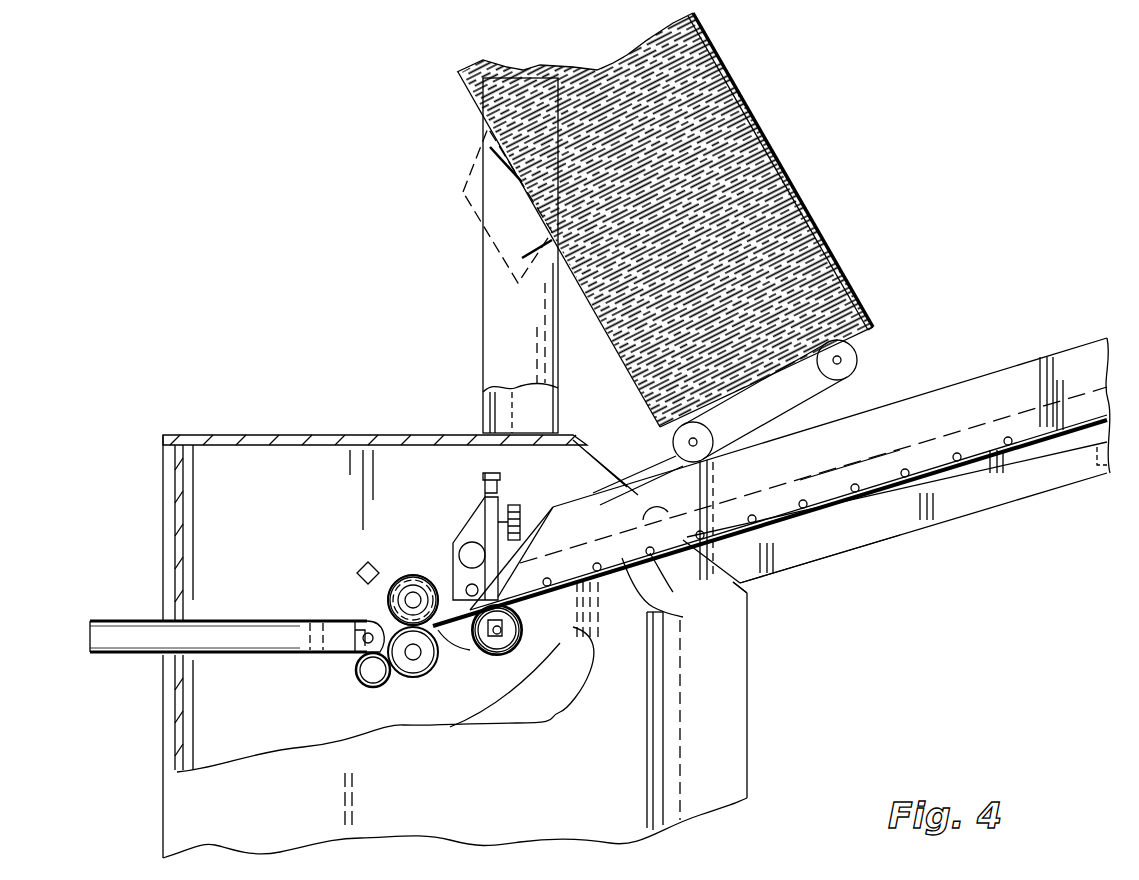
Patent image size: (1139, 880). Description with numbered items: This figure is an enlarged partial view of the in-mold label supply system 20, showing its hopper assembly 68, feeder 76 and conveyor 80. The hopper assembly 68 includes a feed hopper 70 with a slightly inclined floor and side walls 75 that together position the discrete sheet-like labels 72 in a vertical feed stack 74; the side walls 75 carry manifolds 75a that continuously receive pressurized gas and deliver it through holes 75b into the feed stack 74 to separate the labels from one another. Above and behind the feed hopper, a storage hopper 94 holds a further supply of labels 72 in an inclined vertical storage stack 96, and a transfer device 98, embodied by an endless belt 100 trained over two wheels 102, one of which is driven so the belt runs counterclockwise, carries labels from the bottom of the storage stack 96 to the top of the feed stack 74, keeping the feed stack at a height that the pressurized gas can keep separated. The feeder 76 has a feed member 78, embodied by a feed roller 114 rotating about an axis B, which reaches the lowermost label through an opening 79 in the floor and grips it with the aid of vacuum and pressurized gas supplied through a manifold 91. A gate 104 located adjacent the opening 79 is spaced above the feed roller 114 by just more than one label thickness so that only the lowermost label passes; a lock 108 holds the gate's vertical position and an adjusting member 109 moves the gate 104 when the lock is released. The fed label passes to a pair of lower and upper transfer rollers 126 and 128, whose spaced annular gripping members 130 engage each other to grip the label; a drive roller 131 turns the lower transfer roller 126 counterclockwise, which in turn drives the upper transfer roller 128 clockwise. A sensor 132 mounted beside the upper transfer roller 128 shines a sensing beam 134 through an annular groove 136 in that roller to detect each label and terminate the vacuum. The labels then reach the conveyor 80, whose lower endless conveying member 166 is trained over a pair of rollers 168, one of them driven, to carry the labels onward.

The in-mold label supply system 20 is at (280, 148).
The hopper assembly 68 is at (893, 117).
The feed hopper 70 is at (560, 502).
The labels 72 is at (762, 202).
The feed stack 74 is at (783, 540).
The side walls 75 is at (835, 482).
The manifolds 75a is at (748, 585).
The holes 75b is at (625, 553).
The feeder 76 is at (527, 648).
The feed member 78 is at (516, 658).
The opening 79 is at (448, 650).
The conveyor 80 is at (135, 683).
The manifold 91 is at (494, 660).
The storage hopper 94 is at (772, 126).
The storage stack 96 is at (812, 252).
The transfer device 98 is at (838, 396).
The endless belt 100 is at (818, 392).
The wheels 102 is at (852, 362).
The gate 104 is at (532, 562).
The lock 108 is at (511, 506).
The adjusting member 109 is at (445, 540).
The feed roller 114 is at (512, 632).
The lower transfer roller 126 is at (412, 680).
The upper transfer roller 128 is at (410, 585).
The annular gripping members 130 is at (395, 580).
The drive roller 131 is at (365, 682).
The sensor 132 is at (360, 565).
The sensing beam 134 is at (385, 596).
The annular groove 136 is at (432, 578).
The lower endless conveying member 166 is at (205, 628).
The rollers 168 is at (360, 662).
The axis B is at (493, 710).